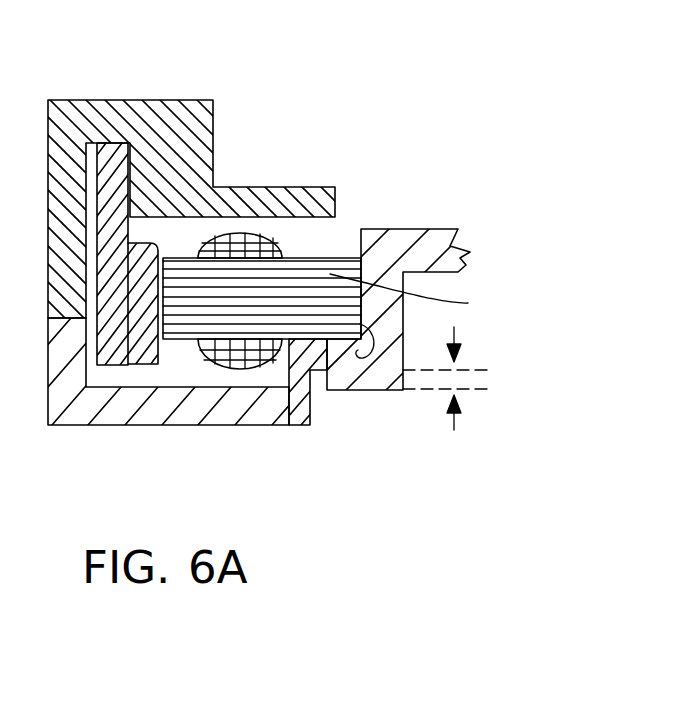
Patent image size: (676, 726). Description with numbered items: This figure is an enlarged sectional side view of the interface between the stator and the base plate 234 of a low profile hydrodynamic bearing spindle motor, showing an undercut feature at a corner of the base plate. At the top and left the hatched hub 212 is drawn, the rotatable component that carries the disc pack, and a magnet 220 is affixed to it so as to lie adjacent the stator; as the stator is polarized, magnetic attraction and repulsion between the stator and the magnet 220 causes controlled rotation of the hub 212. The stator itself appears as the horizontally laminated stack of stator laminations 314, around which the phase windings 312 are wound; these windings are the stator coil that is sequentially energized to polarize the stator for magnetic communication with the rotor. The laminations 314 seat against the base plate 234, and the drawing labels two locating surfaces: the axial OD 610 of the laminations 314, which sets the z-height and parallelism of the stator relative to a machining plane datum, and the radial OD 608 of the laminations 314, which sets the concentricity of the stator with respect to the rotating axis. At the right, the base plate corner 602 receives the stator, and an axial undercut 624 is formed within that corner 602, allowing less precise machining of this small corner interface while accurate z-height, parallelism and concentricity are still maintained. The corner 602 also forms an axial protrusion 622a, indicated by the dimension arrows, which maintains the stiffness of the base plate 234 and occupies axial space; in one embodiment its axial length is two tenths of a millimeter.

The hub 212 is at (82, 107).
The magnet 220 is at (150, 240).
The base plate 234 is at (158, 417).
The phase windings 312 is at (245, 238).
The stator laminations 314 is at (280, 288).
The base plate corner 602 is at (365, 365).
The radial OD 608 is at (421, 292).
The axial OD 610 is at (300, 372).
The axial protrusion 622a is at (455, 327).
The axial undercut 624 is at (361, 348).